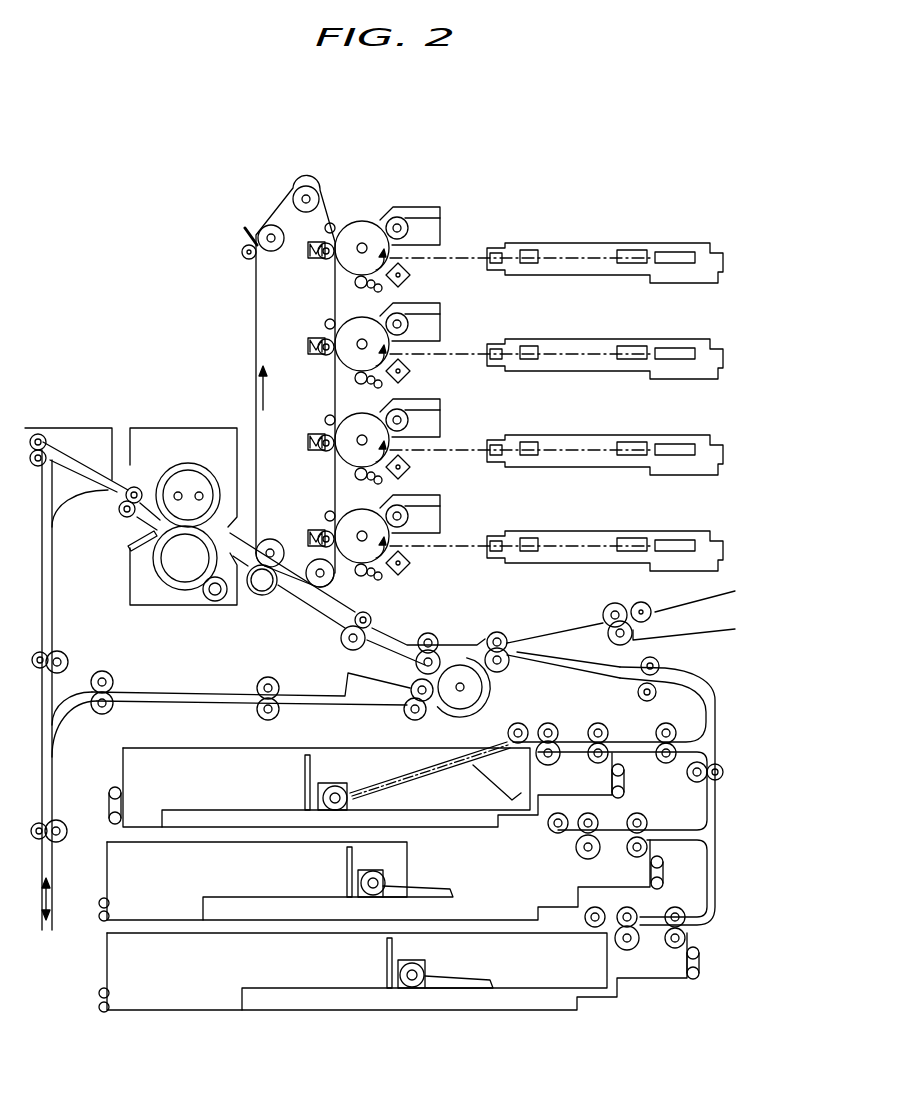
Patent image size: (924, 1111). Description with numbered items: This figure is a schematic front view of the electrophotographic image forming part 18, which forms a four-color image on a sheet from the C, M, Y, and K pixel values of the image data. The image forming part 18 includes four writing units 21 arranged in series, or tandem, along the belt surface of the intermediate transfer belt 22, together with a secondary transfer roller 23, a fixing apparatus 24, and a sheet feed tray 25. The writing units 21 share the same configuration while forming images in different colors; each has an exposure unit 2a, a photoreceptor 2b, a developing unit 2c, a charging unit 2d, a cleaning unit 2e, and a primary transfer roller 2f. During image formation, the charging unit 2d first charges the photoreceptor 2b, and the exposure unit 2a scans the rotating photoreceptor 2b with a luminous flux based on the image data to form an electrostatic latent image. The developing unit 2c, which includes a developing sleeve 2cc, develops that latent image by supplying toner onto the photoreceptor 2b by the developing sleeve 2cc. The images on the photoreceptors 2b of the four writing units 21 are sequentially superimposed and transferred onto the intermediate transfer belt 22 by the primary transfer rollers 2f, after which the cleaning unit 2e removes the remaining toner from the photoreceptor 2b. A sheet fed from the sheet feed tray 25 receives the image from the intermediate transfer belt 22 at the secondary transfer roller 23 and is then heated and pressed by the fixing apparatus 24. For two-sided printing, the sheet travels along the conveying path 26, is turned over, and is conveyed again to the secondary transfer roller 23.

The image forming part 18 is at (747, 103).
The writing unit 21 is at (725, 225).
The exposure unit 2a is at (583, 243).
The photoreceptor 2b is at (363, 221).
The developing unit 2c is at (440, 237).
The developing sleeve 2cc is at (413, 210).
The charging unit 2d is at (410, 283).
The cleaning unit 2e is at (353, 281).
The primary transfer roller 2f is at (308, 244).
The intermediate transfer belt 22 is at (255, 340).
The secondary transfer roller 23 is at (268, 597).
The fixing apparatus 24 is at (130, 592).
The sheet feed tray 25 is at (122, 766).
The conveying path 26 is at (47, 628).